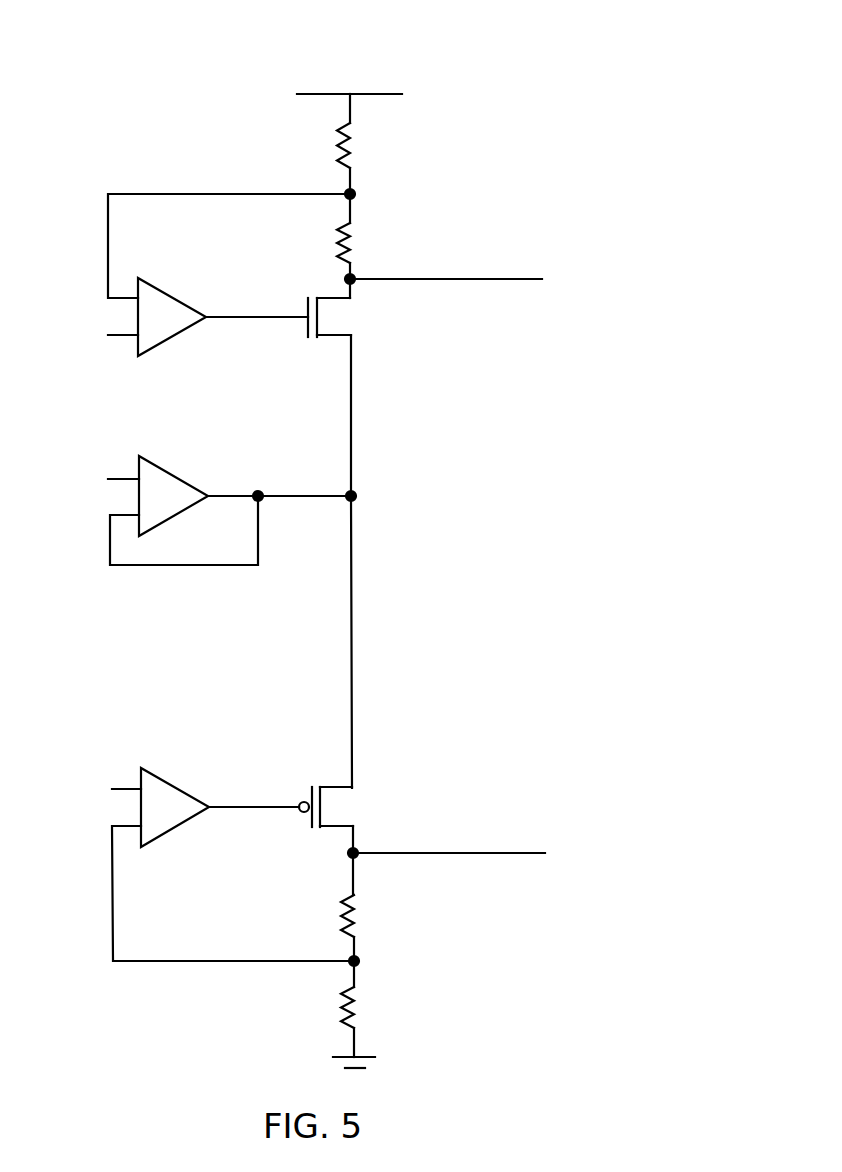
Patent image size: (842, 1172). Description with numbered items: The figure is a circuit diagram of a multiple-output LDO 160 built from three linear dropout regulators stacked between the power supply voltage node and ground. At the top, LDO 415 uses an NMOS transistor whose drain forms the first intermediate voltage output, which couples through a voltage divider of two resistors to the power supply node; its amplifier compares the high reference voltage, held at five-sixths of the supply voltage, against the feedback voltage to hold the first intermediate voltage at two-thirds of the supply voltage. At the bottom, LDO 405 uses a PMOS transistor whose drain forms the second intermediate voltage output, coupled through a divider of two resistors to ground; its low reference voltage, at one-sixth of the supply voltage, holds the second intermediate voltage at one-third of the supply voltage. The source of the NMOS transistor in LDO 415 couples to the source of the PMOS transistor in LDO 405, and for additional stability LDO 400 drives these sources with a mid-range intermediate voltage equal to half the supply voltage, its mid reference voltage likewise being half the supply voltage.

The multiple-output LDO 160 is at (281, 39).
The LDO 415 is at (227, 167).
The LDO 400 is at (228, 447).
The LDO 405 is at (230, 767).